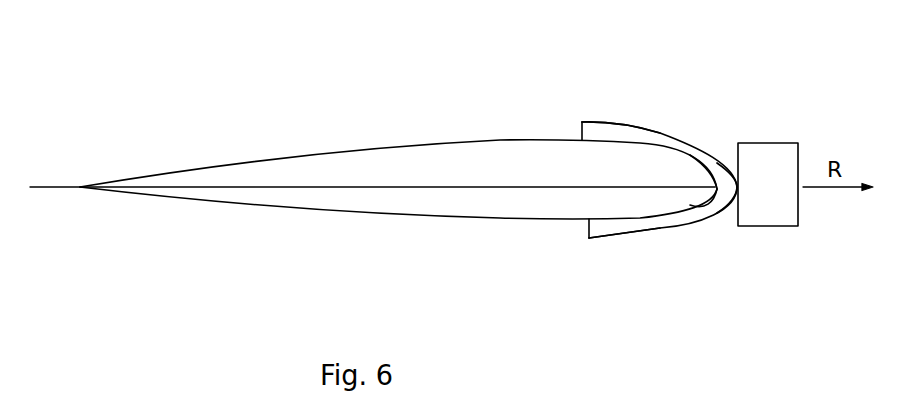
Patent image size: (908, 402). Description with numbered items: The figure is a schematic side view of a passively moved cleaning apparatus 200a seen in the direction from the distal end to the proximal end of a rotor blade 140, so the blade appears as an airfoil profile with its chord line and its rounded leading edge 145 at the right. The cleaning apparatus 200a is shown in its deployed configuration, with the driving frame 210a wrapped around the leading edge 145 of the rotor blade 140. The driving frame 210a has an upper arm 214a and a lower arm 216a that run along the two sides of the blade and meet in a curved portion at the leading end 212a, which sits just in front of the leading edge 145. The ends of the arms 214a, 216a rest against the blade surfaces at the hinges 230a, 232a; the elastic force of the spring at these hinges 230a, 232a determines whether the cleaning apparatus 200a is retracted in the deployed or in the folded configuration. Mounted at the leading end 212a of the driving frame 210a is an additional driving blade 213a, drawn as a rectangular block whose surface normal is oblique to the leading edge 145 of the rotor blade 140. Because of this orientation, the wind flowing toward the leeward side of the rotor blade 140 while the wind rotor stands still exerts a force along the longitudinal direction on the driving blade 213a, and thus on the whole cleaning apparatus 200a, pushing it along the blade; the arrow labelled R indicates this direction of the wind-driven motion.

The rotor blade 140 is at (426, 162).
The leading edge 145 is at (703, 197).
The cleaning apparatus 200a is at (733, 92).
The driving frame 210a is at (693, 138).
The leading end 212a is at (725, 190).
The driving blade 213a is at (783, 205).
The driving frame arm 214a is at (610, 122).
The driving frame arm 216a is at (622, 227).
The hinge 230a is at (580, 125).
The hinge 232a is at (587, 228).